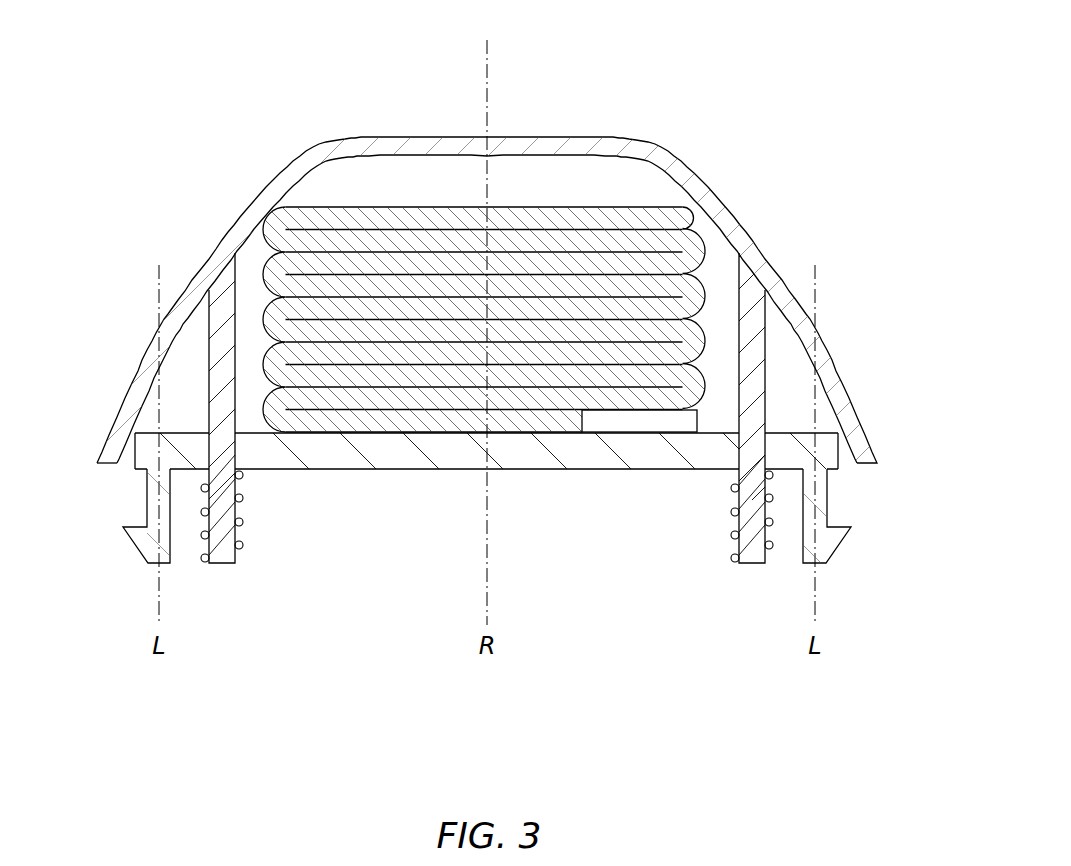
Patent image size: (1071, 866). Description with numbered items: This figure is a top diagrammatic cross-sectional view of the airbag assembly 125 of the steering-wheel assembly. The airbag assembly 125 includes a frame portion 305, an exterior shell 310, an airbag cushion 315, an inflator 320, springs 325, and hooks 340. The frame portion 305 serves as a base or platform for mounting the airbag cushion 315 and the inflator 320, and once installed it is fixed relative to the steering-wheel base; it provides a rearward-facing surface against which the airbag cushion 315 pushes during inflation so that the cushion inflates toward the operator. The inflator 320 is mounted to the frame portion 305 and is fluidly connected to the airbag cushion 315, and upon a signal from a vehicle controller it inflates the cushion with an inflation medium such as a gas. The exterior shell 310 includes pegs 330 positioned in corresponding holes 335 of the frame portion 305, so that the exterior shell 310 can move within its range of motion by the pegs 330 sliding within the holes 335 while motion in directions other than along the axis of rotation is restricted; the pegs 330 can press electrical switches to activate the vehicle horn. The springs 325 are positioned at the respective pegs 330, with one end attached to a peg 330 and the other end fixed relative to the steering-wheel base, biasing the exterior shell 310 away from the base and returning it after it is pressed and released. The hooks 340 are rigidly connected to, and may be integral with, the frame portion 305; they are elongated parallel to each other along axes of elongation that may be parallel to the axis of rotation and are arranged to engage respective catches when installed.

The airbag assembly 125 is at (741, 55).
The frame portion 305 is at (395, 452).
The exterior shell 310 is at (313, 145).
The airbag cushion 315 is at (418, 215).
The inflator 320 is at (603, 422).
The springs 325 is at (733, 547).
The pegs 330 is at (752, 564).
The holes 335 is at (739, 437).
The hooks 340 is at (833, 548).